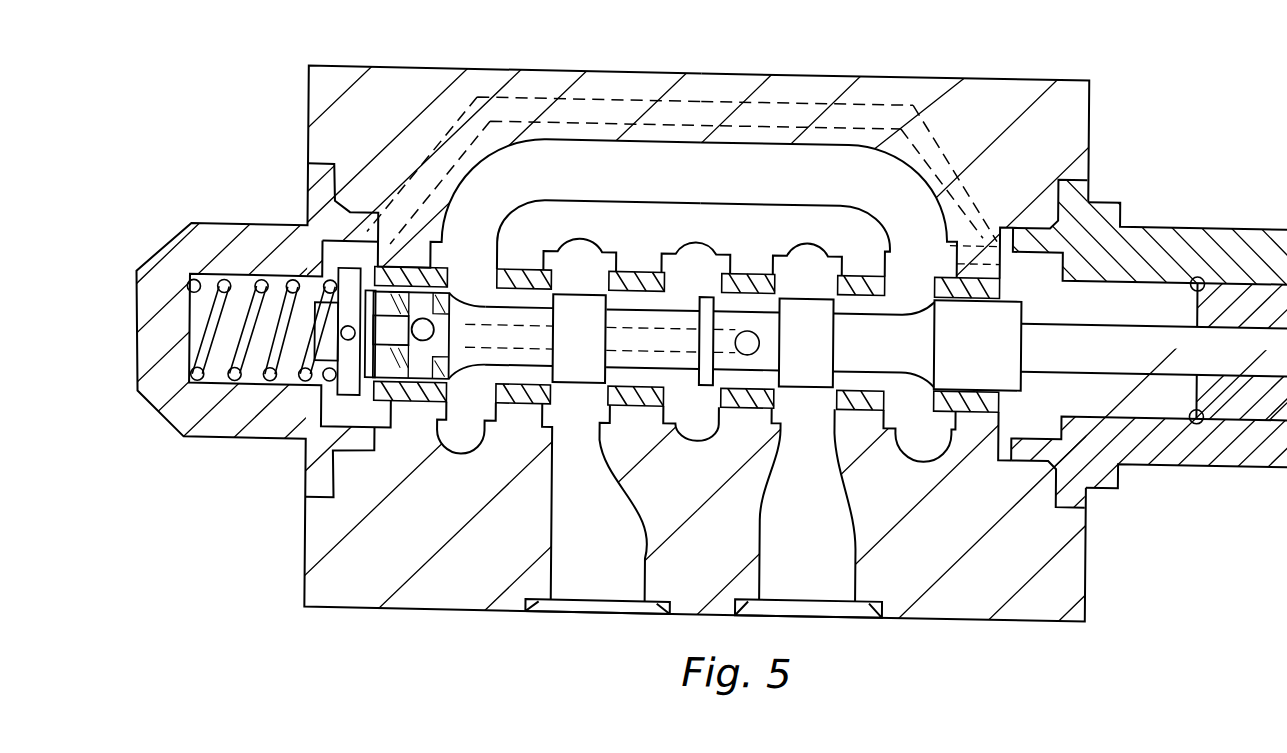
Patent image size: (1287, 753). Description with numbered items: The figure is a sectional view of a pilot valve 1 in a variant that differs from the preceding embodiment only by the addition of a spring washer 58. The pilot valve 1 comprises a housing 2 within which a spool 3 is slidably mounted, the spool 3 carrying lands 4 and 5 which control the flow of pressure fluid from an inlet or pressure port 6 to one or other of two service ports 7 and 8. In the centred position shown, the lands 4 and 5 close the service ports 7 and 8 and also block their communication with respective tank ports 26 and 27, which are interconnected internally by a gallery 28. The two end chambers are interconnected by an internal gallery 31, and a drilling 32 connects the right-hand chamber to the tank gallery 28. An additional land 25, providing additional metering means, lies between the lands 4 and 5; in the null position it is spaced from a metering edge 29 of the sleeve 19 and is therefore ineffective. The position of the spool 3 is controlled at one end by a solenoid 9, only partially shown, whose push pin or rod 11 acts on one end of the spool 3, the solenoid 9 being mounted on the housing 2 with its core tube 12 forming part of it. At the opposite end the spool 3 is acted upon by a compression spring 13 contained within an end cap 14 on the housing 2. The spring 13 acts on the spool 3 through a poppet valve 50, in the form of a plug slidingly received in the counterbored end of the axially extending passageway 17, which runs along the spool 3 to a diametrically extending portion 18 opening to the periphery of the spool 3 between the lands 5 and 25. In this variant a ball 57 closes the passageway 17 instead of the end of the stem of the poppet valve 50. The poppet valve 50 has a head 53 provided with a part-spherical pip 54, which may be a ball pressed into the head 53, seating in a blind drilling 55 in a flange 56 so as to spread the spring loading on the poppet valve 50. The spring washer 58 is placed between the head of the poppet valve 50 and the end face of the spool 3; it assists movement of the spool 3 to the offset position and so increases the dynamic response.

The pilot valve 1 is at (643, 375).
The housing 2 is at (897, 78).
The spool 3 is at (640, 266).
The land 4 is at (583, 372).
The land 5 is at (812, 370).
The inlet or pressure port 6 is at (693, 427).
The service port 7 is at (587, 531).
The service port 8 is at (795, 539).
The solenoid 9 is at (1225, 284).
The push pin or rod 11 is at (1137, 346).
The core tube 12 is at (1107, 194).
The compression spring 13 is at (252, 356).
The end cap 14 is at (171, 401).
The passageway 17 is at (533, 383).
The diametrically-extending portion 18 is at (773, 342).
The sleeve 19 is at (538, 258).
The additional land 25 is at (705, 371).
The tank port 26 is at (465, 442).
The tank port 27 is at (928, 450).
The gallery 28 is at (690, 173).
The metering edge 29 is at (740, 272).
The internal gallery 31 is at (692, 94).
The drilling 32 is at (950, 251).
The poppet valve 50 is at (440, 265).
The head 53 is at (364, 378).
The part-spherical pip 54 is at (374, 297).
The blind drilling 55 is at (347, 327).
The flange 56 is at (351, 387).
The ball 57 is at (432, 328).
The spring washer 58 is at (403, 397).